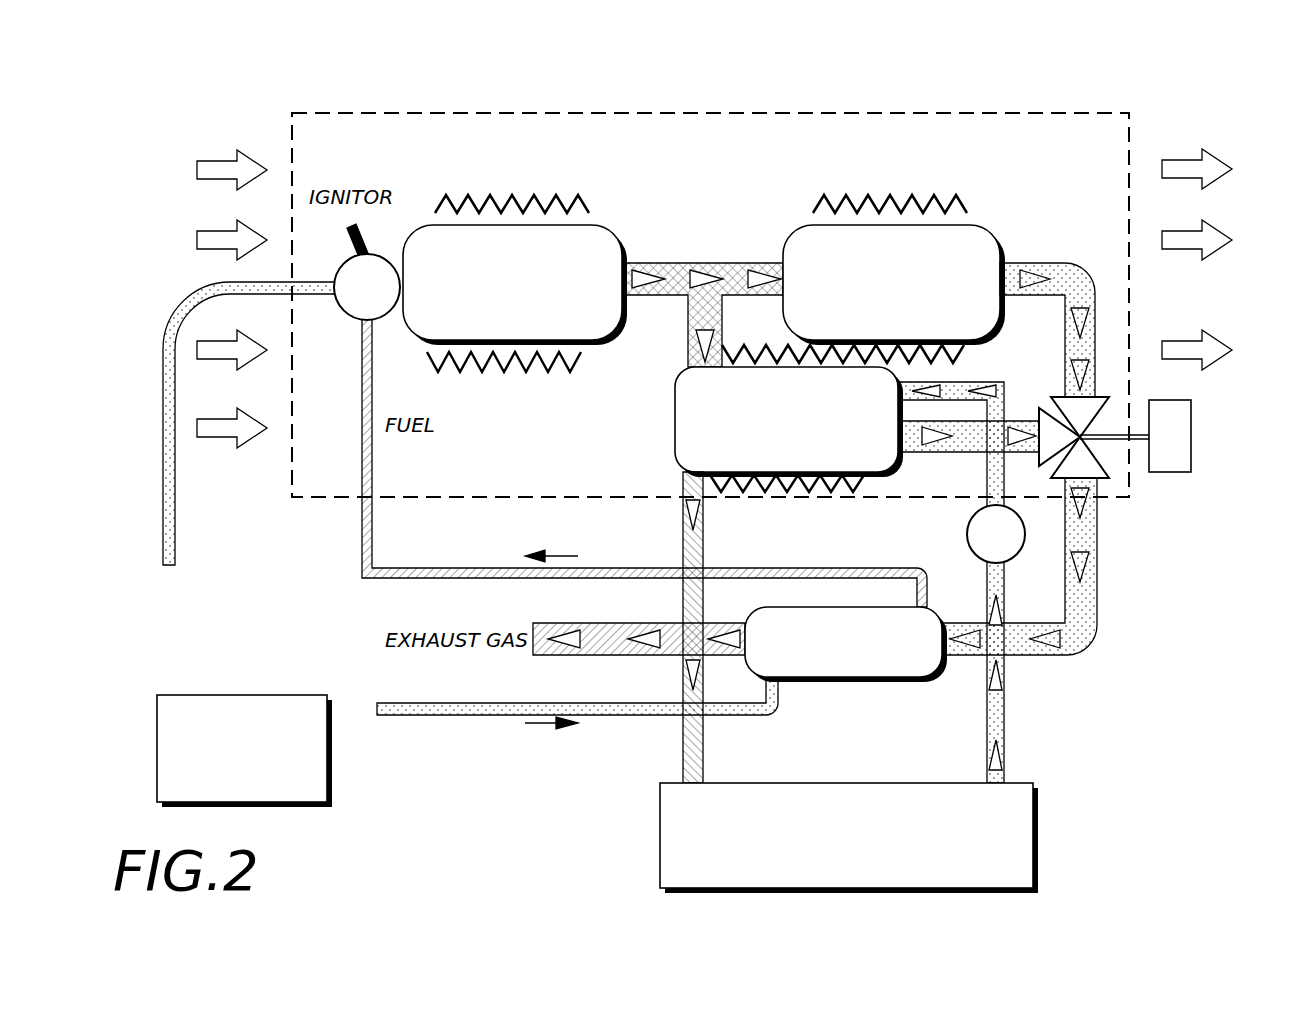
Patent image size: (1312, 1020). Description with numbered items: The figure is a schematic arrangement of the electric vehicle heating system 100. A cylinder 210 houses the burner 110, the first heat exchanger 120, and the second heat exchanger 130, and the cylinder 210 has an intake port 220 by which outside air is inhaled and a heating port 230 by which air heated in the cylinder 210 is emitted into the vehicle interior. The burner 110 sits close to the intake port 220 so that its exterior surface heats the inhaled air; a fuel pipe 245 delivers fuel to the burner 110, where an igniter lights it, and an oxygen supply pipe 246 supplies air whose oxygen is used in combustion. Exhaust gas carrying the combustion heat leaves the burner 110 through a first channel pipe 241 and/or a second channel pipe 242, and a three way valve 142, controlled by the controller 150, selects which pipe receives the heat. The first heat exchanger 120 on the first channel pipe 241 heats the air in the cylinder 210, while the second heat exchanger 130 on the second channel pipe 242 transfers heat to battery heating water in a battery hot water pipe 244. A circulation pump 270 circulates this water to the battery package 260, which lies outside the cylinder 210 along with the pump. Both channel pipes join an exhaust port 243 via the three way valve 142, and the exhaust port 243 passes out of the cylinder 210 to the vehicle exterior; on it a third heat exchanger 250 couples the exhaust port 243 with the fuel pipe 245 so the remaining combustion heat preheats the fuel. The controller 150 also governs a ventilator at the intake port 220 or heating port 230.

The heating system 100 is at (166, 53).
The burner 110 is at (492, 298).
The first heat exchanger 120 is at (872, 298).
The second heat exchanger 130 is at (767, 431).
The three way valve 142 is at (1193, 434).
The controller 150 is at (223, 761).
The cylinder 210 is at (403, 113).
The intake port 220 is at (292, 129).
The heating port 230 is at (1131, 138).
The first channel pipe 241 is at (1037, 263).
The second channel pipe 242 is at (1037, 420).
The exhaust port 243 is at (1097, 538).
The battery hot water pipe 244 is at (1004, 705).
The fuel pipe 245 is at (401, 715).
The oxygen supply pipe 246 is at (163, 530).
The third heat exchanger 250 is at (823, 657).
The battery package 260 is at (827, 848).
The circulation pump 270 is at (1017, 555).